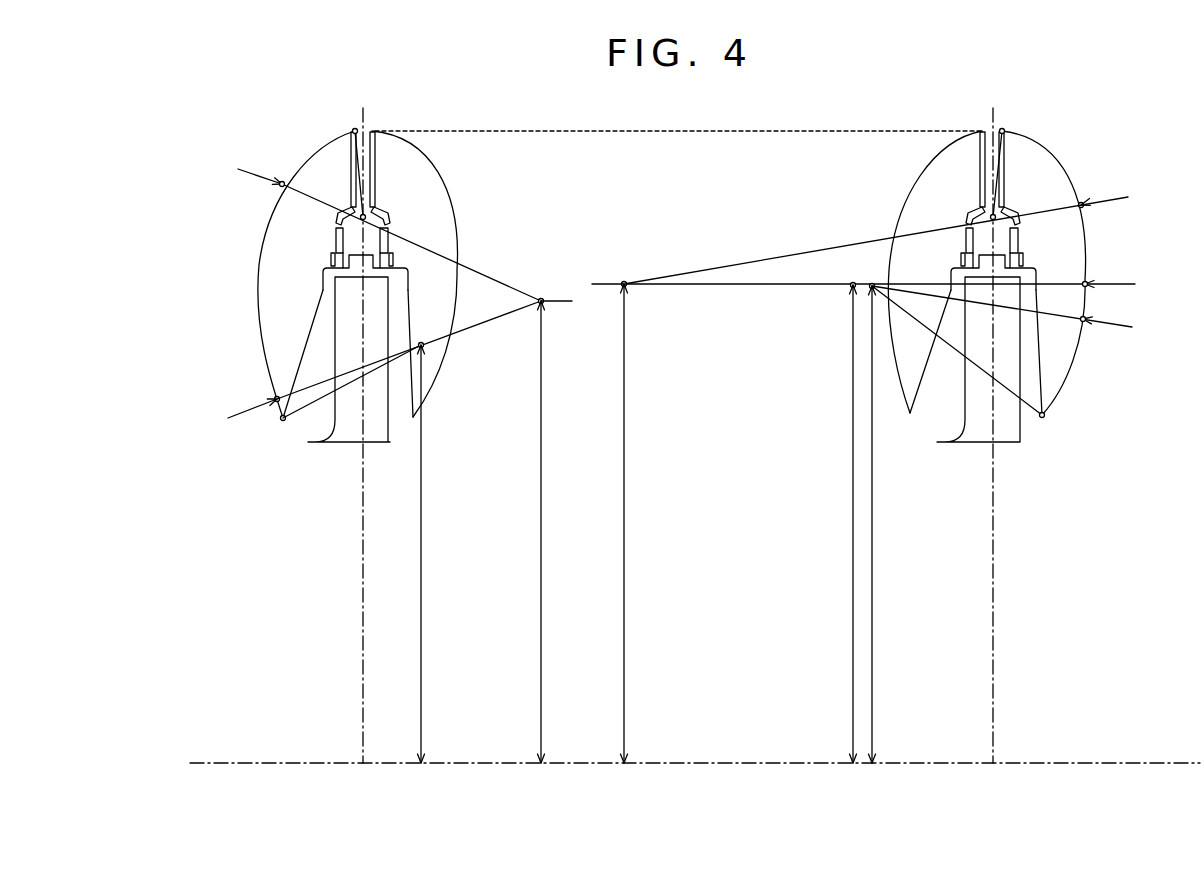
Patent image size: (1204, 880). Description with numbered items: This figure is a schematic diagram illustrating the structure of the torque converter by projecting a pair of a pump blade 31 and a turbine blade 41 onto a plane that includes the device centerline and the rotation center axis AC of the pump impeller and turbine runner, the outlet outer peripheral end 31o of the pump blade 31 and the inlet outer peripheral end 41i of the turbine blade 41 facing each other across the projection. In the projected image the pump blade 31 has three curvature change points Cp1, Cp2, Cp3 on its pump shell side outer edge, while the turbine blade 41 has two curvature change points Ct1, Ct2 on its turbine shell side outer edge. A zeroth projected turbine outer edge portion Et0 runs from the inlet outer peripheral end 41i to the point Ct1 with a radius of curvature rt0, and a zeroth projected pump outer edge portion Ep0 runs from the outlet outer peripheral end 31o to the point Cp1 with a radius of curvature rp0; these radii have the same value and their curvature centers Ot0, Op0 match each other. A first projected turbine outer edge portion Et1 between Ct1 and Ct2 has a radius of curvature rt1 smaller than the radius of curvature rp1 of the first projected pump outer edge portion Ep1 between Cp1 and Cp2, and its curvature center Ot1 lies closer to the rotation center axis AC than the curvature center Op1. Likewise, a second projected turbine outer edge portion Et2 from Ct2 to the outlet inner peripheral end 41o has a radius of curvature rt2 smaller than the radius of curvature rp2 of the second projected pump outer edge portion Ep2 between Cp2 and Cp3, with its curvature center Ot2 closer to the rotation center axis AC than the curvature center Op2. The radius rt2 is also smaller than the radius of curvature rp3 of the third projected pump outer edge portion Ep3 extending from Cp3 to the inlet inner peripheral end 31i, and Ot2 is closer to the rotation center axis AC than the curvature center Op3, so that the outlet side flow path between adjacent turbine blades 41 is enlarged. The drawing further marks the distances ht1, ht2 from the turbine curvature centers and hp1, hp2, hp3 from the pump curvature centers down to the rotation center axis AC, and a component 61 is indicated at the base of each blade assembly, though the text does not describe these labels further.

The turbine blade 41 is at (273, 310).
The inlet outer peripheral end 41i is at (353, 130).
The outlet inner peripheral end 41o is at (282, 427).
The pump blade 31 is at (450, 232).
The outlet outer peripheral end 31o is at (1005, 130).
The inlet inner peripheral end 31i is at (1046, 418).
The light source lamp 61 is at (389, 443).
The rotation center axis AC is at (740, 765).
The radius of curvature of the zeroth projected turbine outer edge portion rt0 is at (355, 131).
The radius of curvature of the first projected turbine outer edge portion rt1 is at (372, 229).
The radius of curvature of the second projected turbine outer edge portion rt2 is at (368, 367).
The radius of curvature of the zeroth projected pump outer edge portion rp0 is at (1002, 131).
The radius of curvature of the first projected pump outer edge portion rp1 is at (896, 234).
The radius of curvature of the second projected pump outer edge portion rp2 is at (1156, 285).
The radius of curvature of the third projected pump outer edge portion rp3 is at (1023, 315).
The zeroth projected turbine outer edge portion Et0 is at (303, 157).
The first projected turbine outer edge portion Et1 is at (260, 250).
The second projected turbine outer edge portion Et2 is at (278, 423).
The zeroth projected pump outer edge portion Ep0 is at (1053, 150).
The first projected pump outer edge portion Ep1 is at (1085, 225).
The second projected pump outer edge portion Ep2 is at (1087, 298).
The third projected pump outer edge portion Ep3 is at (1067, 373).
The curvature change point Ct1 is at (275, 190).
The curvature change point Ct2 is at (273, 397).
The curvature change point Cp1 is at (1081, 202).
The curvature change point Cp2 is at (1088, 280).
The curvature change point Cp3 is at (1086, 325).
The curvature center Ot0 is at (375, 208).
The curvature center Ot1 is at (543, 298).
The curvature center Ot2 is at (424, 349).
The curvature center Op0 is at (980, 210).
The curvature center Op1 is at (625, 282).
The curvature center Op2 is at (852, 290).
The curvature center Op3 is at (872, 284).
The height ht1 is at (541, 532).
The height ht2 is at (423, 554).
The height hp1 is at (626, 523).
The height hp2 is at (854, 524).
The height hp3 is at (873, 524).